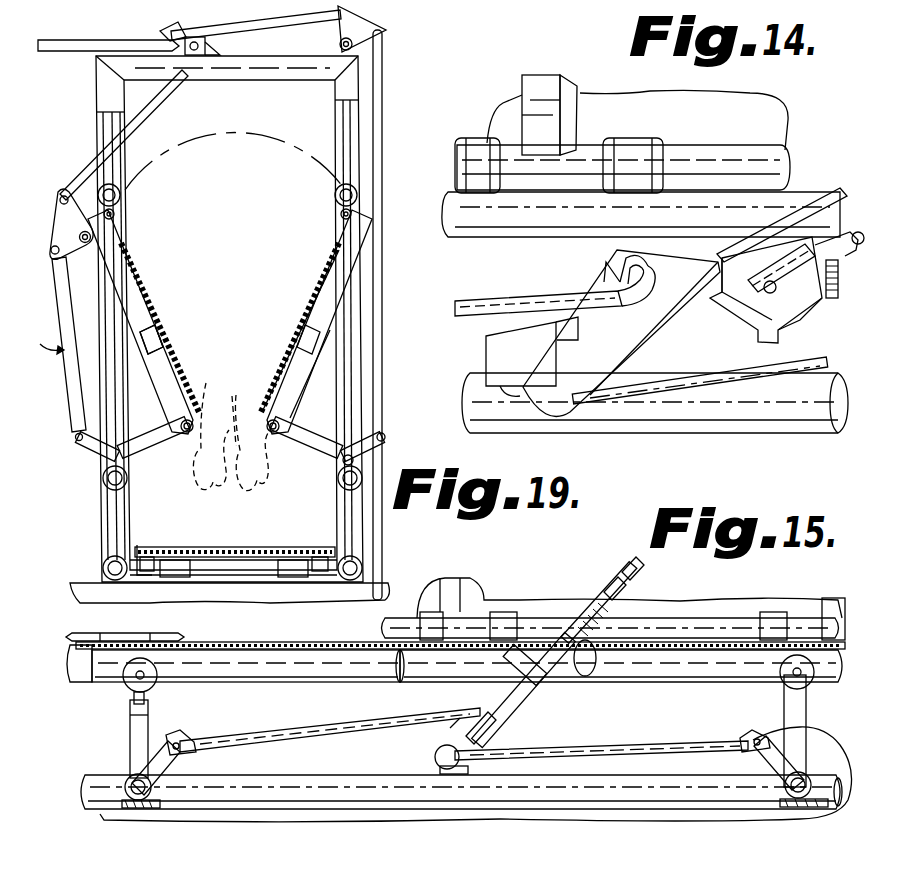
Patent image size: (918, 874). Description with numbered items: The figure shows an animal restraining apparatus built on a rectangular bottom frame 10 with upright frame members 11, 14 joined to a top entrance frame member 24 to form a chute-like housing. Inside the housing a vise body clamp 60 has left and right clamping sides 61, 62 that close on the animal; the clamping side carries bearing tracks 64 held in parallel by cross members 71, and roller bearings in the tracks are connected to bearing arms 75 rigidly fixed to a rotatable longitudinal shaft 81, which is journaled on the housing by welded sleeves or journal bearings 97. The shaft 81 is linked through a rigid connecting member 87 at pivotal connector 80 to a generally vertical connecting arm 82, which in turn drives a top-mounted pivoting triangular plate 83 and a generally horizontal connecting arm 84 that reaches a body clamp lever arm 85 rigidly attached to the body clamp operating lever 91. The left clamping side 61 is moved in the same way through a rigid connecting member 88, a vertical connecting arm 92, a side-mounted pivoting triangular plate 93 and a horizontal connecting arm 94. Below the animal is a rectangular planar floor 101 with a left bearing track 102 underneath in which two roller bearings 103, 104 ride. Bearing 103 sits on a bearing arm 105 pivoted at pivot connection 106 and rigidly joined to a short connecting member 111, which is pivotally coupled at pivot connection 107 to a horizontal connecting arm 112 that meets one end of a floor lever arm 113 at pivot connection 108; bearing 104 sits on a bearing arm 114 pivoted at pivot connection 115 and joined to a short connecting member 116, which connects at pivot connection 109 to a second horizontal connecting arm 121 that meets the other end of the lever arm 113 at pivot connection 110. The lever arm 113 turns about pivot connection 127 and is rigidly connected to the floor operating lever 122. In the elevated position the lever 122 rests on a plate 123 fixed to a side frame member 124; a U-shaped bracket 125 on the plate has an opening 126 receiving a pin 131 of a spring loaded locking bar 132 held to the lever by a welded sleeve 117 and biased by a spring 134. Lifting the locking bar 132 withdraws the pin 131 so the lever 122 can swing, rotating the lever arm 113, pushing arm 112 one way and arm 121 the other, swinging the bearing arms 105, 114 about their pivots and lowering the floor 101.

In FIG. 19, the bottom frame 10 is at (104, 569).
In FIG. 14, the bottom frame 10 is at (661, 438).
In FIG. 15, the bottom frame 10 is at (399, 783).
In FIG. 19, the upright frame member 11 is at (109, 320).
In FIG. 19, the upright frame member 14 is at (341, 401).
In FIG. 19, the top entrance frame member 24 is at (271, 78).
In FIG. 19, the vise body clamp 60 is at (44, 337).
In FIG. 19, the left clamping side 61 is at (150, 300).
In FIG. 19, the right clamping side 62 is at (310, 310).
In FIG. 19, the bearing track 64 is at (323, 272).
In FIG. 19, the cross member 71 is at (160, 366).
In FIG. 19, the bearing arm 75 is at (139, 438).
In FIG. 14, the bearing arm 75 is at (540, 92).
In FIG. 19, the pivotal connector 80 is at (385, 434).
In FIG. 19, the rotatable longitudinal shaft 81 is at (343, 463).
In FIG. 14, the rotatable longitudinal shaft 81 is at (731, 144).
In FIG. 15, the rotatable longitudinal shaft 81 is at (610, 628).
In FIG. 19, the vertical connecting arm 82 is at (380, 140).
In FIG. 19, the top-mounted pivoting triangular plate 83 is at (380, 27).
In FIG. 19, the horizontal connecting arm 84 is at (270, 16).
In FIG. 19, the body clamp lever arm 85 is at (166, 25).
In FIG. 19, the rigid connecting member 87 is at (376, 448).
In FIG. 19, the rigid connecting member 88 is at (88, 447).
In FIG. 19, the body clamp operating lever 91 is at (70, 56).
In FIG. 19, the vertical connecting arm 92 is at (70, 388).
In FIG. 19, the side-mounted pivoting triangular plate 93 is at (61, 219).
In FIG. 19, the horizontal connecting arm 94 is at (147, 117).
In FIG. 14, the journal bearing 97 is at (640, 140).
In FIG. 15, the journal bearing 97 is at (516, 612).
In FIG. 19, the floor 101 is at (246, 548).
In FIG. 15, the floor 101 is at (268, 645).
In FIG. 15, the left bearing track 102 is at (331, 668).
In FIG. 15, the roller bearing 103 is at (125, 681).
In FIG. 15, the roller bearing 104 is at (783, 681).
In FIG. 15, the bearing arm 105 is at (130, 727).
In FIG. 15, the pivot connection 106 is at (126, 780).
In FIG. 15, the pivot connection 107 is at (175, 742).
In FIG. 14, the pivot connection 108 is at (618, 280).
In FIG. 15, the pivot connection 109 is at (752, 736).
In FIG. 15, the pivot connection 110 is at (446, 758).
In FIG. 15, the short connecting member 111 is at (166, 758).
In FIG. 14, the horizontal connecting arm 112 is at (505, 308).
In FIG. 15, the horizontal connecting arm 112 is at (290, 738).
In FIG. 14, the floor lever arm 113 is at (545, 358).
In FIG. 15, the floor lever arm 113 is at (490, 745).
In FIG. 15, the bearing arm 114 is at (808, 701).
In FIG. 19, the pivot connection 115 is at (176, 560).
In FIG. 15, the pivot connection 115 is at (784, 787).
In FIG. 19, the short connecting member 116 is at (144, 546).
In FIG. 15, the short connecting member 116 is at (760, 756).
In FIG. 14, the sleeve 117 is at (810, 306).
In FIG. 14, the horizontal connecting arm 121 is at (750, 392).
In FIG. 15, the horizontal connecting arm 121 is at (628, 742).
In FIG. 14, the floor operating lever 122 is at (670, 335).
In FIG. 15, the floor operating lever 122 is at (520, 688).
In FIG. 14, the plate 123 is at (772, 326).
In FIG. 15, the plate 123 is at (572, 674).
In FIG. 19, the side frame member 124 is at (103, 477).
In FIG. 14, the side frame member 124 is at (508, 238).
In FIG. 15, the side frame member 124 is at (418, 666).
In FIG. 14, the U-shaped bracket 125 is at (716, 258).
In FIG. 14, the opening 126 is at (763, 287).
In FIG. 15, the pivot connection 127 is at (446, 737).
In FIG. 14, the pin 131 is at (778, 276).
In FIG. 15, the spring loaded locking bar 132 is at (616, 566).
In FIG. 14, the spring 134 is at (852, 252).
In FIG. 15, the spring 134 is at (588, 600).